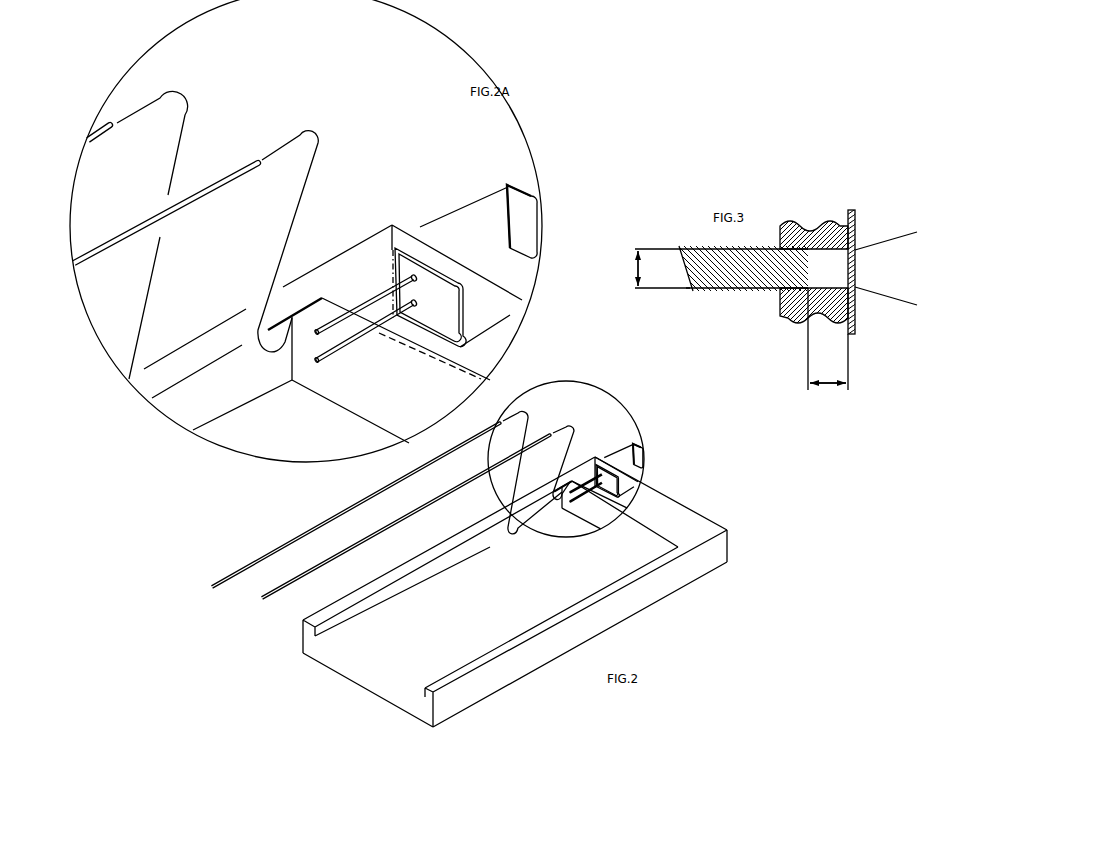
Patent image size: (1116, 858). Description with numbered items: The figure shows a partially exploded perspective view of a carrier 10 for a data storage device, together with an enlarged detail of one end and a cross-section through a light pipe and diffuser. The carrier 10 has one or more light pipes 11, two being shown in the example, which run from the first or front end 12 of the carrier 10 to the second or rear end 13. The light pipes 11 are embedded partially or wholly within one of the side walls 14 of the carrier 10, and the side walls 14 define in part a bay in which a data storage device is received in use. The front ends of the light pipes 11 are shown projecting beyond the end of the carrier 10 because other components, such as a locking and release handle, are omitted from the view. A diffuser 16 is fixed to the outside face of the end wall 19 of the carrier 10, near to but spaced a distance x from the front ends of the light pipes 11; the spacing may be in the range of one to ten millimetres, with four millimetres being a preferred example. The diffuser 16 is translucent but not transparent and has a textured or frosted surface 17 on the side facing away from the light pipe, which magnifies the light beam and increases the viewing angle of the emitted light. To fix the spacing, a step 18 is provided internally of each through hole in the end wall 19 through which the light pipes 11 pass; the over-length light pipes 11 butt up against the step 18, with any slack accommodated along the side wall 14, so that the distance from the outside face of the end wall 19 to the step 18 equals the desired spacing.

In FIG. 2A, the carrier 10 is at (341, 250).
In FIG. 2, the carrier 10 is at (693, 583).
In FIG. 2A, the light pipes 11 is at (98, 246).
In FIG. 2, the light pipes 11 is at (270, 590).
In FIG. 3, the light pipes 11 is at (710, 247).
In FIG. 2, the front end 12 is at (705, 517).
In FIG. 2, the rear end 13 is at (365, 690).
In FIG. 2, the side walls 14 is at (303, 640).
In FIG. 2A, the diffuser 16 is at (530, 227).
In FIG. 2, the diffuser 16 is at (650, 448).
In FIG. 3, the diffuser 16 is at (848, 208).
In FIG. 3, the textured surface 17 is at (859, 319).
In FIG. 3, the step 18 is at (810, 288).
In FIG. 3, the end wall 19 is at (810, 227).